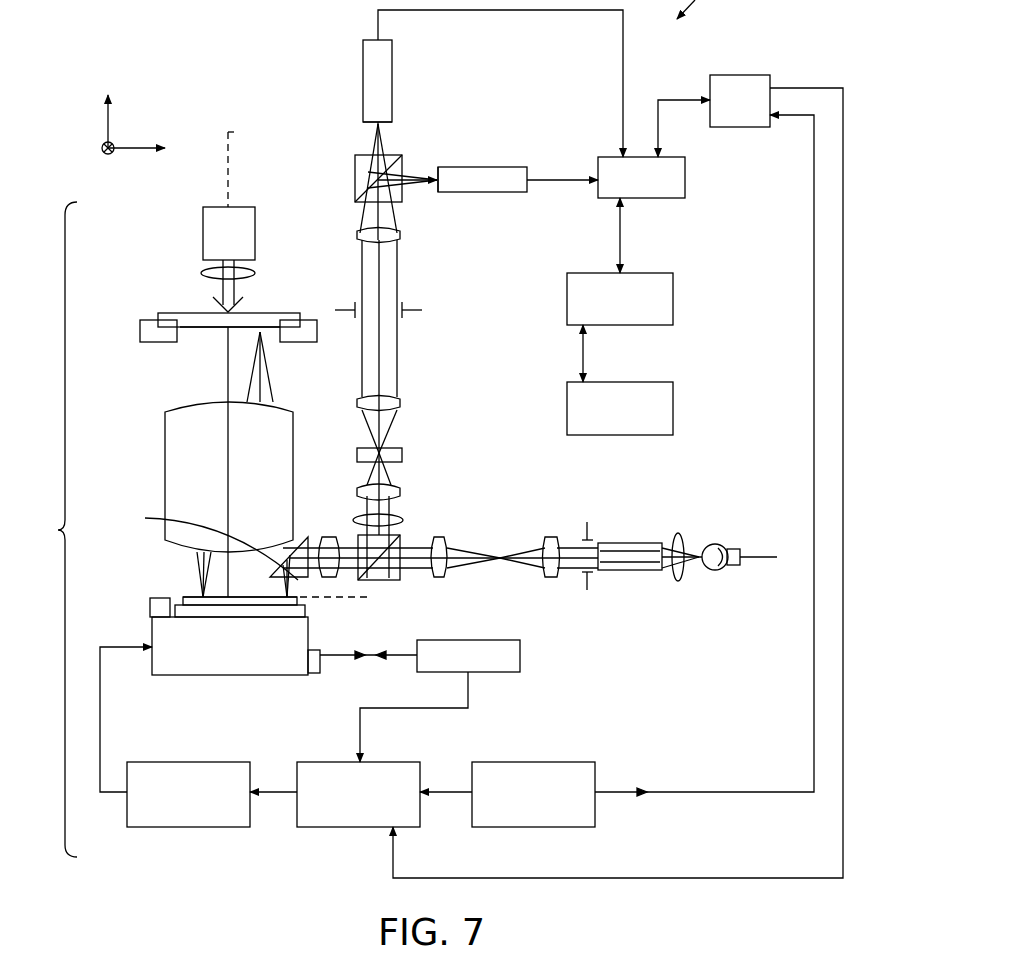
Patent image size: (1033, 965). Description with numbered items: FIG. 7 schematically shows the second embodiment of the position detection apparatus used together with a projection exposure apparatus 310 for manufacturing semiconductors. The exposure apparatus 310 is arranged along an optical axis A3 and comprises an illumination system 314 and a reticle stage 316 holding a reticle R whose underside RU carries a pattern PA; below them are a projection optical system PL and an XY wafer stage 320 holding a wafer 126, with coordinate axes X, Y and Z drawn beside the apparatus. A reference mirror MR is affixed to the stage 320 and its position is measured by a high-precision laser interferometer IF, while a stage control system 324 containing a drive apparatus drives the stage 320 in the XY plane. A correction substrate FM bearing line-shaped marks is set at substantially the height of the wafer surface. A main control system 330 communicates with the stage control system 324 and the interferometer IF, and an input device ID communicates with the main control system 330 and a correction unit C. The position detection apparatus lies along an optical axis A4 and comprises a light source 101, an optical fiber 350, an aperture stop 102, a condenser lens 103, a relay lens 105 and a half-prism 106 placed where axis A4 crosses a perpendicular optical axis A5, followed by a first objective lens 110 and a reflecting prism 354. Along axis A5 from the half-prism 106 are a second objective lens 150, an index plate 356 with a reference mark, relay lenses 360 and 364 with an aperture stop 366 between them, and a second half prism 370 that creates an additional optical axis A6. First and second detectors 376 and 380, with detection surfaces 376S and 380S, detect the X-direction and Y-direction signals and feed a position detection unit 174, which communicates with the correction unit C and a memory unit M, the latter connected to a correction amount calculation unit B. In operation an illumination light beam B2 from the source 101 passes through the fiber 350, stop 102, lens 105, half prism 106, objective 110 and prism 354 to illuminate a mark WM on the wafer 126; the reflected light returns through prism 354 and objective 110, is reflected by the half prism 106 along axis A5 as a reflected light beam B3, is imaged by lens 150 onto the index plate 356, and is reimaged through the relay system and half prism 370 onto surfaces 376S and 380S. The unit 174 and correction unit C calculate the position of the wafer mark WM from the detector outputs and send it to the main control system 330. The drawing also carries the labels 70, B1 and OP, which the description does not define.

The exposure apparatus 70 is at (702, 9).
The light source 101 is at (717, 543).
The aperture stop 102 is at (590, 587).
The condenser lens 103 is at (552, 580).
The relay lens 105 is at (447, 542).
The half-prism 106 is at (386, 581).
The first objective lens 110 is at (324, 535).
The wafer 126 is at (190, 597).
The second objective lens 150 is at (400, 490).
The position detection unit 174 is at (662, 198).
The projection exposure apparatus 310 is at (53, 529).
The illumination system 314 is at (140, 330).
The reticle stage 316 is at (150, 319).
The XY wafer stage 320 is at (203, 677).
The stage control system 324 is at (197, 827).
The main control system 330 is at (337, 827).
The optical fiber 350 is at (628, 543).
The reflecting prism 354 is at (206, 545).
The index plate 356 is at (402, 455).
The relay lens 360 is at (400, 403).
The relay lens 364 is at (400, 236).
The aperture stop 366 is at (415, 305).
The second half prism 370 is at (355, 175).
The first detector 376 is at (492, 192).
The detection surface 376S is at (438, 170).
The second detector 380 is at (392, 80).
The detection surface 380S is at (368, 124).
The optical axis A3 is at (234, 134).
The optical axis A4 is at (760, 562).
The optical axis A5 is at (379, 347).
The optical axis A6 is at (408, 187).
The exposure light beam B1 is at (203, 273).
The illumination light beam B2 is at (678, 581).
The reflected light beam B3 is at (403, 520).
The correction amount calculation unit B is at (673, 405).
The correction unit C is at (742, 75).
The memory unit M is at (673, 290).
The reticle R is at (288, 313).
The pattern PA is at (200, 333).
The underside of reticle RU is at (275, 344).
The projection optical system PL is at (165, 467).
The correction substrate FM is at (150, 596).
The wafer mark WM is at (293, 598).
The object plane OP is at (345, 597).
The reference mirror MR is at (313, 675).
The laser interferometer IF is at (503, 672).
The input device ID is at (547, 827).
The X-direction X is at (145, 149).
The Y-direction Y is at (99, 149).
The Z axis Z is at (107, 107).